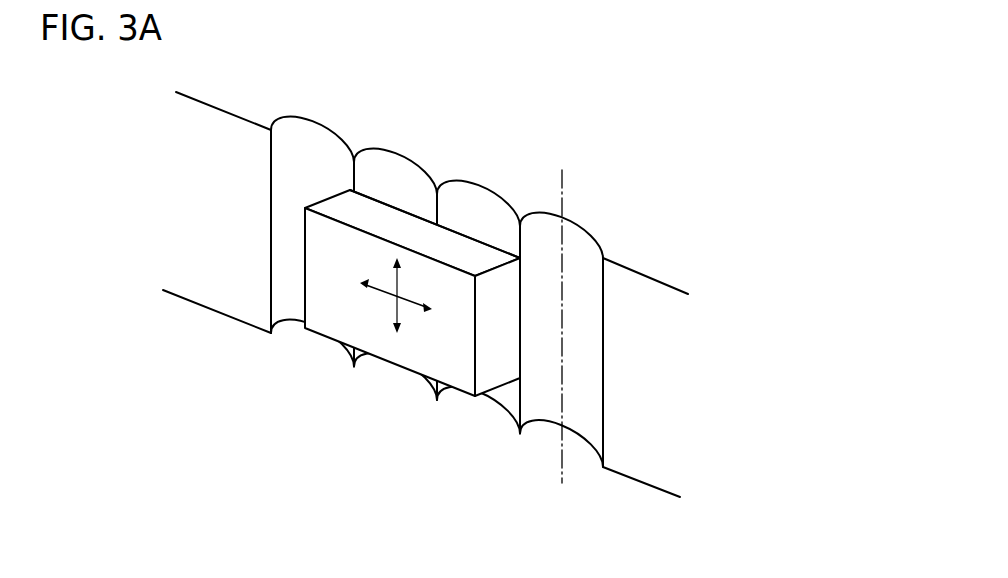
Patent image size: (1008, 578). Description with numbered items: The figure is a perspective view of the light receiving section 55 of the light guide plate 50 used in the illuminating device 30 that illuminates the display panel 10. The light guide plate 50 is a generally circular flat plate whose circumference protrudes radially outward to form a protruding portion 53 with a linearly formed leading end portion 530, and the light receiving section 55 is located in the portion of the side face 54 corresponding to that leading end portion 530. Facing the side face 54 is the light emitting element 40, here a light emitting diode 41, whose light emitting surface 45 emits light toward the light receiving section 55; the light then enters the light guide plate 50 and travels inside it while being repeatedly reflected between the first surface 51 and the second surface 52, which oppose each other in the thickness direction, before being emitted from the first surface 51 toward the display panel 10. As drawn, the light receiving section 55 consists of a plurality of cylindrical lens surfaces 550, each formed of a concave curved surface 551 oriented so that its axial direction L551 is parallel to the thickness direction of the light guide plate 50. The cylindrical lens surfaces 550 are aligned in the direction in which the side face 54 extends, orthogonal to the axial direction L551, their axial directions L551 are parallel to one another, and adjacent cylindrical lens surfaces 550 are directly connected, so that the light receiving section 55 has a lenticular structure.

The display panel 10 is at (121, 80).
The illuminating device 30 is at (154, 80).
The light emitting element 40 is at (412, 309).
The light emitting diode 41 is at (443, 335).
The light emitting surface 45 is at (490, 249).
The light guide plate 50 is at (426, 294).
The first surface 51 is at (180, 298).
The second surface 52 is at (233, 90).
The protruding portion 53 is at (646, 400).
The side face 54 is at (641, 400).
The leading end portion 530 is at (642, 447).
The light receiving section 55 is at (452, 256).
The cylindrical lens surface 550 is at (541, 233).
The concave curved surface 551 is at (437, 283).
The axial direction L551 is at (563, 197).